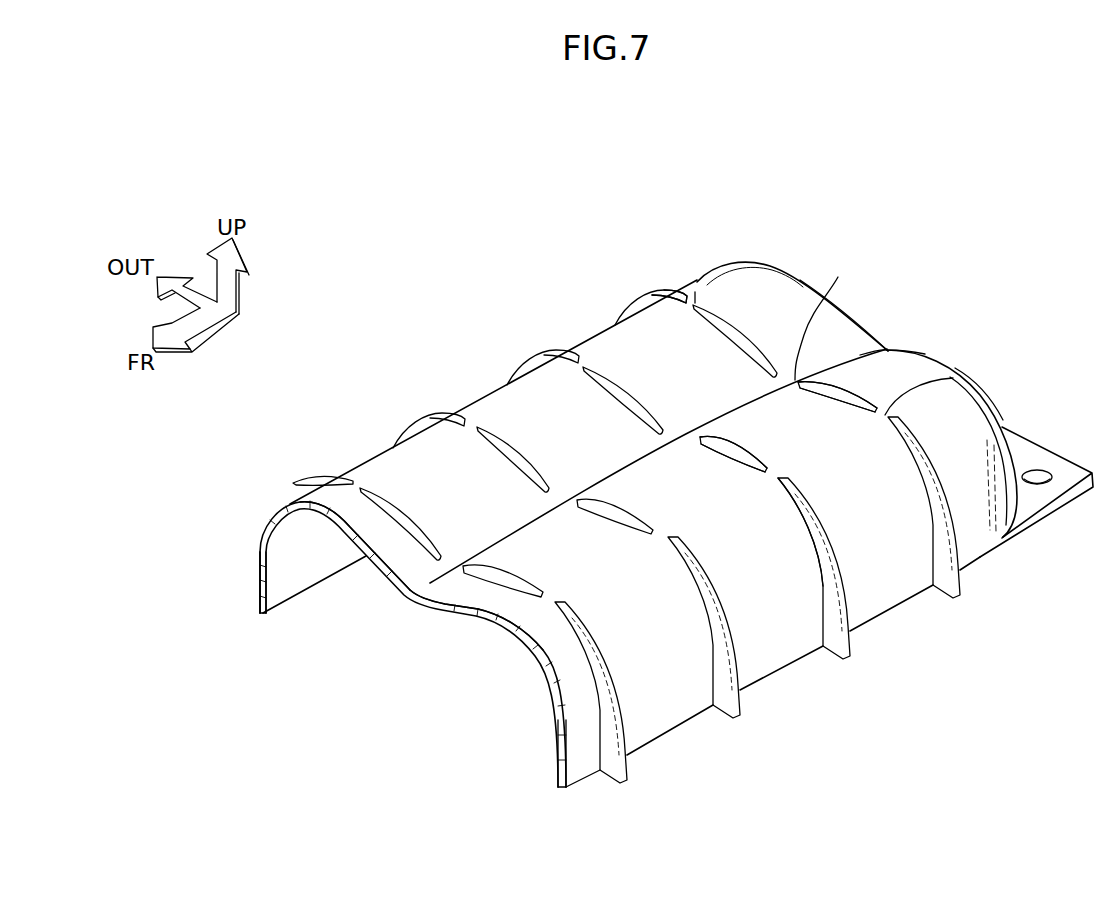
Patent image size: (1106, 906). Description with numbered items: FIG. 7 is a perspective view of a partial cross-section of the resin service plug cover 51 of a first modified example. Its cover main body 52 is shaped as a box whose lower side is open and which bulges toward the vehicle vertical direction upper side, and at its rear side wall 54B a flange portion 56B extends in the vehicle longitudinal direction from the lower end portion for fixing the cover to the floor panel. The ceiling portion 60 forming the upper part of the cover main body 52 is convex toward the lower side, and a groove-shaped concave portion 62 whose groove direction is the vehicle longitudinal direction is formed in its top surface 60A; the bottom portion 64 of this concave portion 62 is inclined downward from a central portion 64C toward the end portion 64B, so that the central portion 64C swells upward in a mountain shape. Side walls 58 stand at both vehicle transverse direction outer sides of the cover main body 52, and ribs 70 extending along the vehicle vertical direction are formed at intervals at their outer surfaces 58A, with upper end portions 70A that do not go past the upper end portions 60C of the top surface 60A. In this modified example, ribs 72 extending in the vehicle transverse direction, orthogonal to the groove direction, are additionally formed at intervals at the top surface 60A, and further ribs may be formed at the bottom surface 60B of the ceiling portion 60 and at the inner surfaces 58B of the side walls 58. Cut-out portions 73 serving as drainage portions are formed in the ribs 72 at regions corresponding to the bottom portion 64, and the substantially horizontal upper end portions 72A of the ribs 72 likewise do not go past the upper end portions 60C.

The service plug cover 51 is at (786, 197).
The cover main body 52 is at (774, 265).
The rear side wall 54B is at (998, 402).
The flange portion 56B is at (1033, 453).
The side walls 58 is at (261, 578).
The outer surfaces of the side walls 58A is at (263, 542).
The inner surfaces of the side walls 58B is at (287, 572).
The ceiling portion 60 is at (413, 590).
The top surface 60A is at (396, 547).
The bottom surface 60B is at (480, 616).
The upper end portions of the top surface 60C is at (697, 279).
The concave portion 62 is at (843, 333).
The bottom portion 64 is at (825, 317).
The end portion of the bottom portion 64B is at (887, 353).
The central portion of the bottom portion 64C is at (655, 455).
The ribs 70 is at (615, 324).
The upper end portions of the ribs 70A is at (682, 294).
The ribs 72 is at (703, 452).
The upper end portions of the ribs 72A is at (767, 469).
The cut-out portions 73 is at (800, 373).